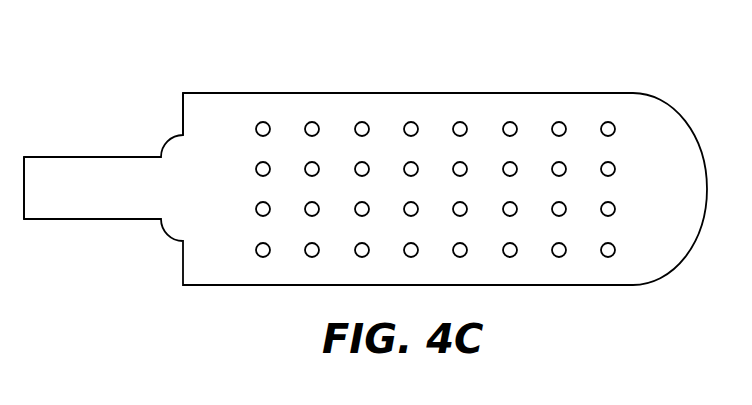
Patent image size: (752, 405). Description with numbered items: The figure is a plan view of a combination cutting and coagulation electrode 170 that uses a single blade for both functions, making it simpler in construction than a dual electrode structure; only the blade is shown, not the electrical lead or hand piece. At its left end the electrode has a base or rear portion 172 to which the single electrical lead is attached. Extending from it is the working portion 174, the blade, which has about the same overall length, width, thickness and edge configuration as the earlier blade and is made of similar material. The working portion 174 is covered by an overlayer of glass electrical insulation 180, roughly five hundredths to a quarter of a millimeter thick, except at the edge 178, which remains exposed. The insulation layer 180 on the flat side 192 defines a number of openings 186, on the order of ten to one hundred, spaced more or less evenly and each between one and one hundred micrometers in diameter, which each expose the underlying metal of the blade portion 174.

The combination cutting and coagulation electrode 170 is at (104, 84).
The base or rear portion 172 is at (104, 220).
The working portion 174 is at (606, 94).
The edge 178 is at (597, 287).
The glass electrical insulation layer 180 is at (238, 123).
The openings 186 is at (313, 126).
The flat side 192 is at (445, 113).